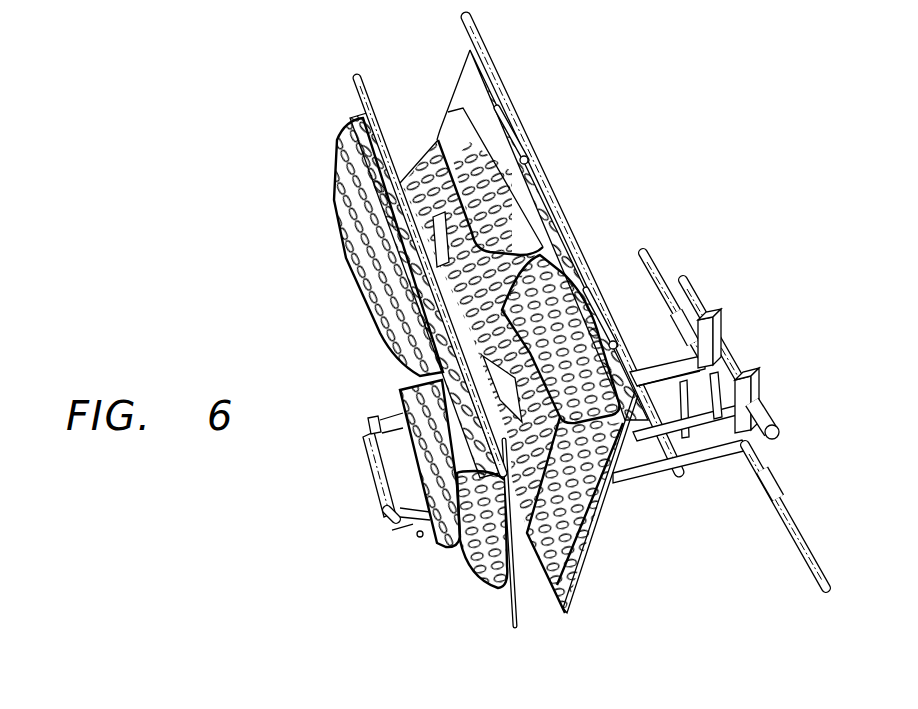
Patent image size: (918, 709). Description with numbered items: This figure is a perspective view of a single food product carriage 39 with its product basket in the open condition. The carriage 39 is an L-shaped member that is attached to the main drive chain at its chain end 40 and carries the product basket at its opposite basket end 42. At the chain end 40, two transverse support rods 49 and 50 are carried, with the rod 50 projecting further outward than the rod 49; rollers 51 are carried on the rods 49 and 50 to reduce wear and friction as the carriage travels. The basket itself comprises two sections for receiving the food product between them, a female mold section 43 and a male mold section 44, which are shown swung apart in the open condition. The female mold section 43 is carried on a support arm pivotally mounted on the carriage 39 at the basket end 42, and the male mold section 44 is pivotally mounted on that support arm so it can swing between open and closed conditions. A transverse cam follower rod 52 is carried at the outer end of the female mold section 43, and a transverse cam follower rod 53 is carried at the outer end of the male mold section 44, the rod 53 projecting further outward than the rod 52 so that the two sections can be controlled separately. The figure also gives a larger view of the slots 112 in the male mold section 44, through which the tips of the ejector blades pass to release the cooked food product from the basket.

The food product carriage 39 is at (697, 462).
The chain end 40 is at (752, 422).
The basket end 42 is at (405, 537).
The female mold section 43 is at (463, 563).
The male mold section 44 is at (590, 520).
The transverse support rod 49 is at (735, 358).
The transverse support rod 50 is at (723, 405).
The rollers 51 is at (700, 292).
The transverse cam follower rod 52 is at (355, 100).
The transverse cam follower rod 53 is at (468, 40).
The slots 112 is at (430, 214).